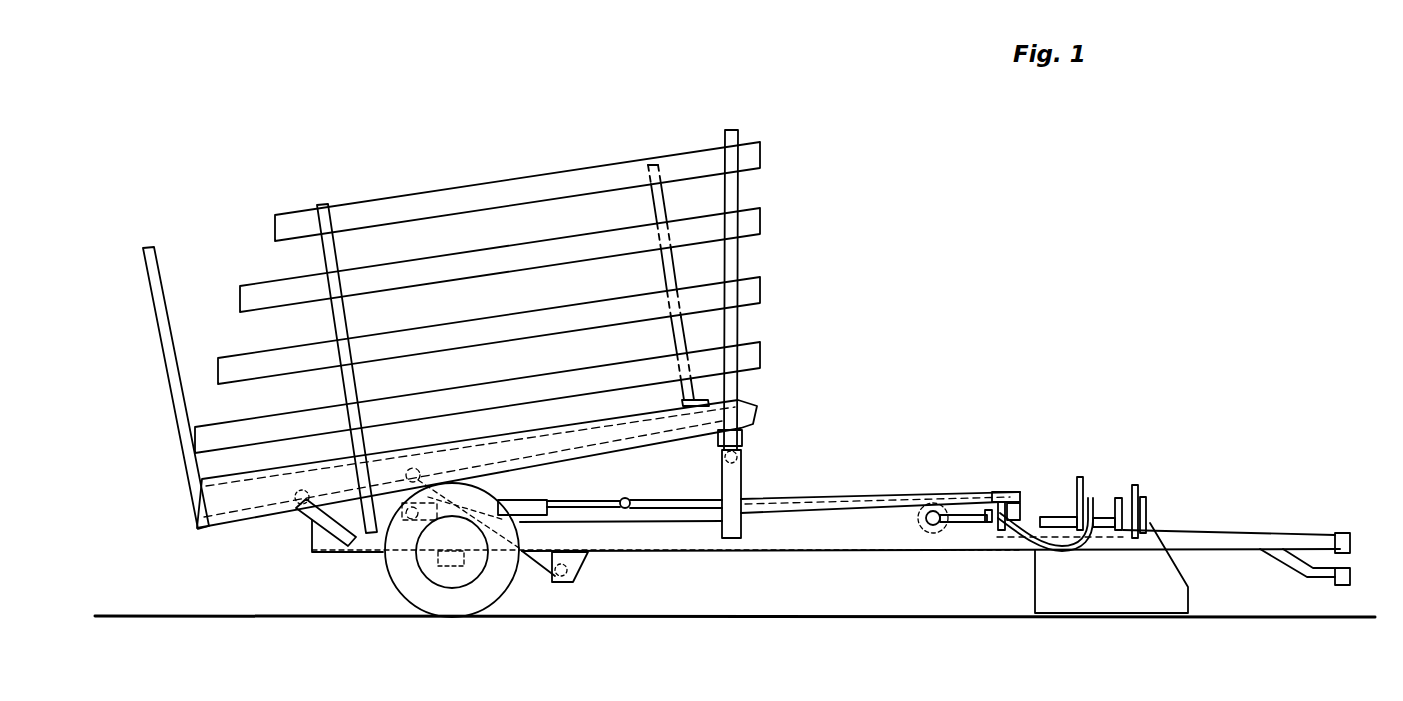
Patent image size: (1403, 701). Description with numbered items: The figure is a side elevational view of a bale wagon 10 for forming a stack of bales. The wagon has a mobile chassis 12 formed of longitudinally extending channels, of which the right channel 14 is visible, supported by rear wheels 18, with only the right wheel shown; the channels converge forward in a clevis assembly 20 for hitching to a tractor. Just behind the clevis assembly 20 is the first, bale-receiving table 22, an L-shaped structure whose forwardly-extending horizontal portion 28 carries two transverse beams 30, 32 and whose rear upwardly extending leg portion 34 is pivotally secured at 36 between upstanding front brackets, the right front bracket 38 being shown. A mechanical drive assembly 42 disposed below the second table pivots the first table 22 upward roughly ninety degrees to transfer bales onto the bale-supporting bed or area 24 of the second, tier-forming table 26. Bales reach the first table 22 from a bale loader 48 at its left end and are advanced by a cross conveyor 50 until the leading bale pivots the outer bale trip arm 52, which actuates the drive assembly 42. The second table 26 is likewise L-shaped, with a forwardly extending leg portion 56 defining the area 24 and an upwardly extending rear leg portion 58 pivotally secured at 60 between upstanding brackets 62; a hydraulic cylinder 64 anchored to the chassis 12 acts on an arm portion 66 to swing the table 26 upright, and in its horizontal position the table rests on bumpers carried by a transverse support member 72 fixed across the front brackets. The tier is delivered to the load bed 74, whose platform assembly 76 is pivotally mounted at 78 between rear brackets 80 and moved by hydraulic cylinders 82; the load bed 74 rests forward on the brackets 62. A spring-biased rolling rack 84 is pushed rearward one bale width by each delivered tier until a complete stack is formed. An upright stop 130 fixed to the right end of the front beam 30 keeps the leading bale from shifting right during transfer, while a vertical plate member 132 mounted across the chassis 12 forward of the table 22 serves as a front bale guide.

The bale wagon 10 is at (1026, 212).
The mobile chassis 12 is at (826, 552).
The right longitudinal channel 14 is at (898, 551).
The rear wheels 18 is at (385, 578).
The clevis assembly 20 is at (1248, 532).
The first bale-receiving table 22 is at (1137, 533).
The bale-supporting bed or area 24 is at (858, 495).
The second tier-forming table 26 is at (812, 496).
The forwardly-extending horizontal portion 28 is at (1122, 569).
The front beam 30 is at (1121, 512).
The rear beam 32 is at (1081, 500).
The rear upwardly extending leg portion 34 is at (1001, 540).
The pivot point 36 is at (994, 498).
The right front bracket 38 is at (1062, 517).
The mechanical drive assembly 42 is at (917, 513).
The bale loader 48 is at (1190, 603).
The cross conveyor 50 is at (1118, 498).
The outer bale trip arm 52 is at (1072, 553).
The forwardly extending leg portion 56 is at (785, 515).
The upwardly extending rear leg portion 58 is at (718, 468).
The pivot point 60 is at (740, 456).
The upstanding brackets 62 is at (740, 496).
The hydraulic cylinder 64 is at (517, 500).
The arm portion 66 is at (676, 491).
The transverse support member 72 is at (1020, 508).
The load bed 74 is at (577, 465).
The platform assembly 76 is at (594, 422).
The pivot mounting 78 is at (296, 496).
The rear brackets 80 is at (301, 512).
The hydraulic cylinders 82 is at (537, 566).
The rolling rack 84 is at (652, 208).
The upright stop 130 is at (1146, 510).
The vertical plate member 132 is at (1141, 491).